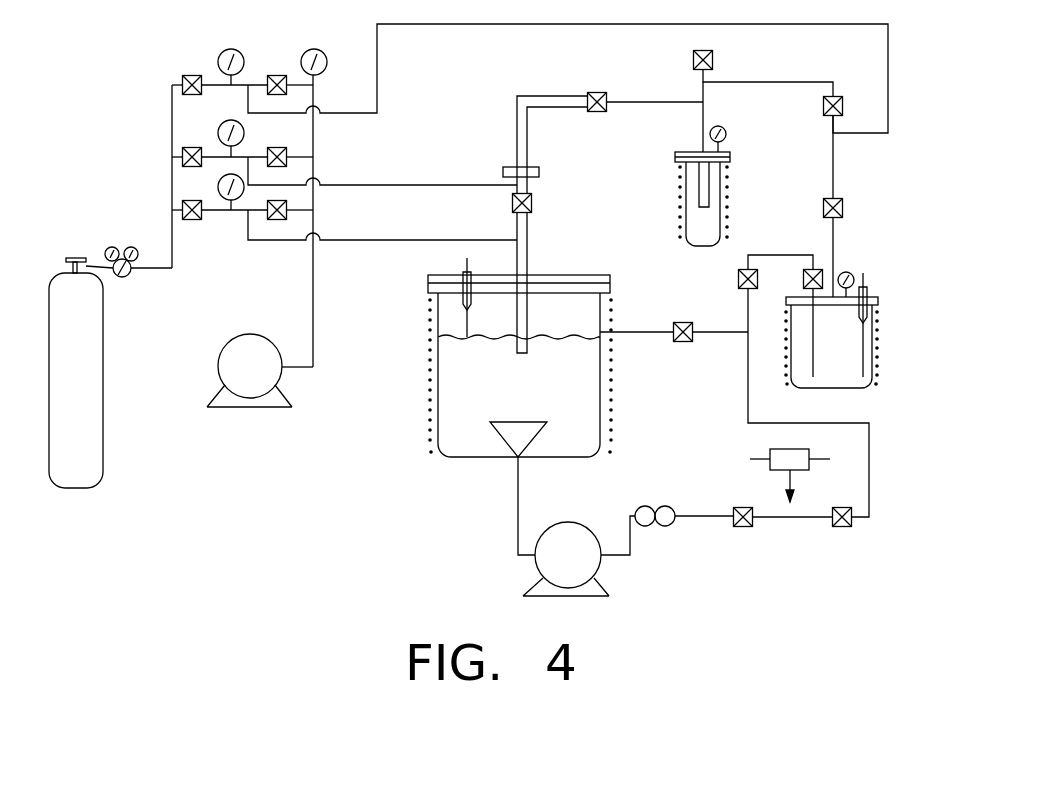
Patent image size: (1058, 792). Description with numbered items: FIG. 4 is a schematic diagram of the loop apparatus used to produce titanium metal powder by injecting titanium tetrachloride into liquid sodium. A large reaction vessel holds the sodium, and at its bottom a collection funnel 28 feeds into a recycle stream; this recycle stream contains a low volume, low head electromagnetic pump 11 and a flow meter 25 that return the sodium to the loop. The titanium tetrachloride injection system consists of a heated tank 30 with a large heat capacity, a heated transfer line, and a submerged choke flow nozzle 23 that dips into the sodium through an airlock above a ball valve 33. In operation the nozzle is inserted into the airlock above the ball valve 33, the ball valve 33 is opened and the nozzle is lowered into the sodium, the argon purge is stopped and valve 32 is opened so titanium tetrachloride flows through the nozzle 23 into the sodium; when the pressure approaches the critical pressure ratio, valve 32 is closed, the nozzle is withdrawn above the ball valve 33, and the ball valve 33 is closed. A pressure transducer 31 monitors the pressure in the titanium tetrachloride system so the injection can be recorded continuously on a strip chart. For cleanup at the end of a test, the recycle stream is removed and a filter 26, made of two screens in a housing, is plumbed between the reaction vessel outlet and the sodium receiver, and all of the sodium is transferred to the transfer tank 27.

The electromagnetic pump 11 is at (599, 569).
The submerged choke flow nozzle 23 is at (520, 355).
The flow meter 25 is at (671, 522).
The filter 26 is at (813, 455).
The transfer tank 27 is at (880, 305).
The collection funnel 28 is at (503, 437).
The heated tank 30 is at (732, 158).
The pressure transducer 31 is at (726, 132).
The valve 32 is at (607, 98).
The ball valve 33 is at (531, 203).